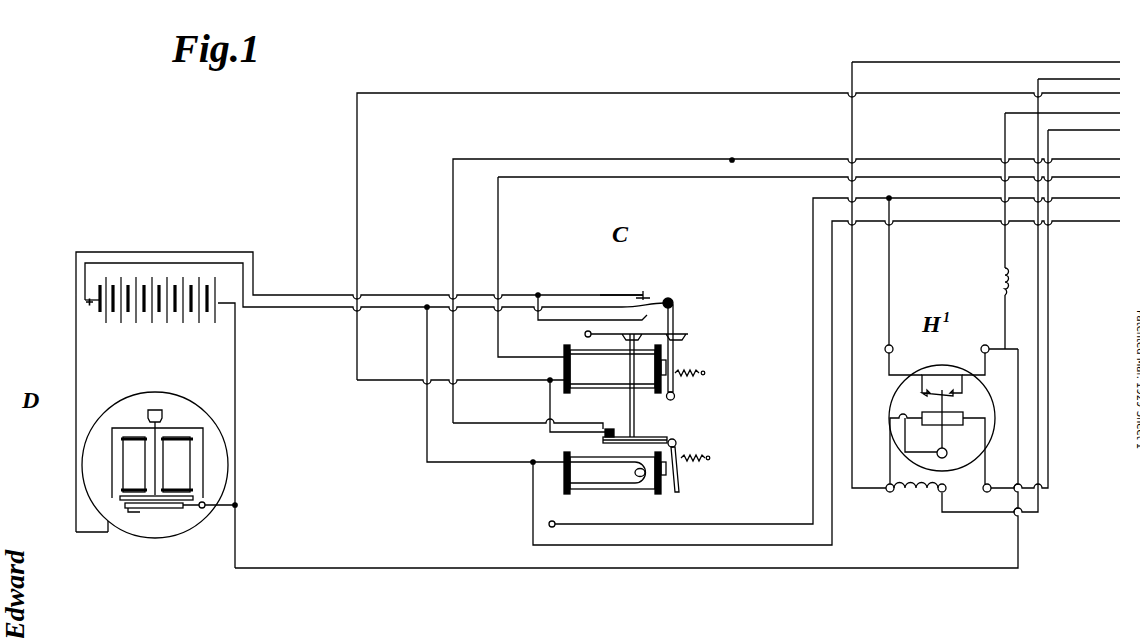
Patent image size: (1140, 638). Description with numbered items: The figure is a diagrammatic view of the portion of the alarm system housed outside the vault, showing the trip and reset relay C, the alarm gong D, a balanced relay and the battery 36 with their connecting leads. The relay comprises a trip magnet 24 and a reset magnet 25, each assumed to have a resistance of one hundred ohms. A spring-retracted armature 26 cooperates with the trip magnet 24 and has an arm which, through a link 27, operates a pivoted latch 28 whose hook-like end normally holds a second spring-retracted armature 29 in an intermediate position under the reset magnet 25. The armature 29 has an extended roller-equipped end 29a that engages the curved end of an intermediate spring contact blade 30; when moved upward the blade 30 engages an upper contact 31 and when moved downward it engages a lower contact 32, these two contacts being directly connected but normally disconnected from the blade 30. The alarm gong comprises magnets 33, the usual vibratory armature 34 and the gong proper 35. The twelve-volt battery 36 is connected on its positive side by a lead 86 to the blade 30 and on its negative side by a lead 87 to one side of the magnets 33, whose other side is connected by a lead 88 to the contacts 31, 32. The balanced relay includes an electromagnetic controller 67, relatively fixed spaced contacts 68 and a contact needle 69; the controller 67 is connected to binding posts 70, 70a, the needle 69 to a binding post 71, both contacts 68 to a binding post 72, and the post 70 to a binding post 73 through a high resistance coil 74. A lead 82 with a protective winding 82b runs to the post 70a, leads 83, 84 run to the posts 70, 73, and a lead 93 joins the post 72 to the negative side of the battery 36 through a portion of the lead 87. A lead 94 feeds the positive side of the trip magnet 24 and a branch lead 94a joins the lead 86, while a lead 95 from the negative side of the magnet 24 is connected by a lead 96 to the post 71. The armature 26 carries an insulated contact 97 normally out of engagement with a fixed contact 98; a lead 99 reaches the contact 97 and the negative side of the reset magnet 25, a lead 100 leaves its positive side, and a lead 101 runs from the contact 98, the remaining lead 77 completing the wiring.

The trip magnet 24 is at (617, 481).
The reset magnet 25 is at (615, 369).
The spring-retracted armature 26 is at (678, 451).
The link 27 is at (628, 380).
The pivoted latch 28 is at (656, 337).
The spring-retracted armature 29 is at (676, 349).
The roller-equipped end 29a is at (676, 302).
The intermediate spring contact blade 30 is at (638, 296).
The upper contact 31 is at (604, 295).
The lower contact 32 is at (576, 321).
The magnets 33 is at (135, 457).
The vibratory armature 34 is at (146, 508).
The gong proper 35 is at (135, 395).
The battery 36 is at (198, 314).
The electromagnetic controller 67 is at (932, 426).
The relatively fixed spaced contacts 68 is at (950, 392).
The contact needle 69 is at (946, 441).
The binding post 70 is at (891, 493).
The binding post 70a is at (988, 493).
The binding post 71 is at (886, 353).
The binding post 72 is at (992, 347).
The binding post 73 is at (946, 488).
The high resistance coil 74 is at (930, 495).
The conductor 77 is at (1074, 131).
The lead 82 is at (1003, 321).
The protective winding 82b is at (1000, 282).
The lead 83 is at (1083, 62).
The lead 84 is at (1040, 78).
The lead 86 is at (410, 307).
The lead 87 is at (236, 420).
The lead 88 is at (76, 400).
The lead 93 is at (366, 568).
The lead 94 is at (533, 517).
The branch lead 94a is at (506, 462).
The lead 95 is at (748, 526).
The lead 96 is at (890, 311).
The contact 97 is at (640, 434).
The relatively fixed contact 98 is at (610, 428).
The lead 99 is at (380, 380).
The lead 100 is at (551, 178).
The lead 101 is at (490, 153).